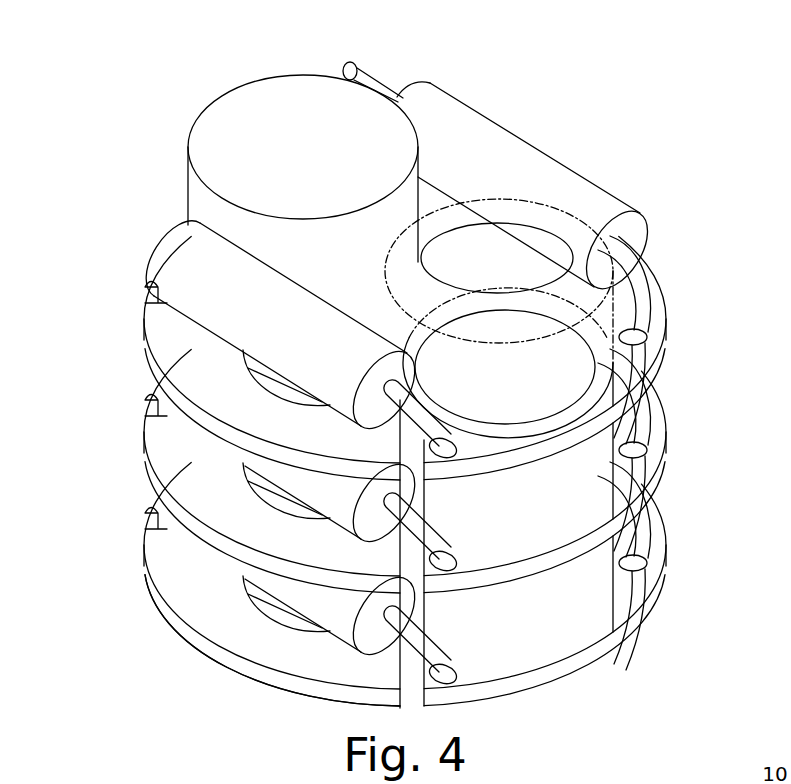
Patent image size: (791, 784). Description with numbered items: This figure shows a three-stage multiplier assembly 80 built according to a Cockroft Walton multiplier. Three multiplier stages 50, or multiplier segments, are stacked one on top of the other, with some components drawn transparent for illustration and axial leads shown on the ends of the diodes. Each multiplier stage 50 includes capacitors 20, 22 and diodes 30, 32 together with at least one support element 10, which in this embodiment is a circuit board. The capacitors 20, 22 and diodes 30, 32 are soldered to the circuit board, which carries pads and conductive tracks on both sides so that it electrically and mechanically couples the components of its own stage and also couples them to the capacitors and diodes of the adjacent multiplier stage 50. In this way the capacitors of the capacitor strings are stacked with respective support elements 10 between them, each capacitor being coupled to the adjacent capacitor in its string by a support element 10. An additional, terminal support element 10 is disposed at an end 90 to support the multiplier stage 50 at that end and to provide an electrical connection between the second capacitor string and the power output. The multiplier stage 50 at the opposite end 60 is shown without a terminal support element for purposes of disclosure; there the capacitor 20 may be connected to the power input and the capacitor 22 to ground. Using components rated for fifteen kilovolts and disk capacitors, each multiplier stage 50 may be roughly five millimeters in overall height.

The support element 10 is at (660, 343).
The capacitor 20 is at (605, 297).
The capacitor 22 is at (210, 104).
The diode 30 is at (548, 152).
The diode 32 is at (277, 262).
The multiplier stage 50 is at (118, 155).
The end 60 is at (635, 225).
The multiplier assembly 80 is at (532, 76).
The end 90 is at (220, 657).